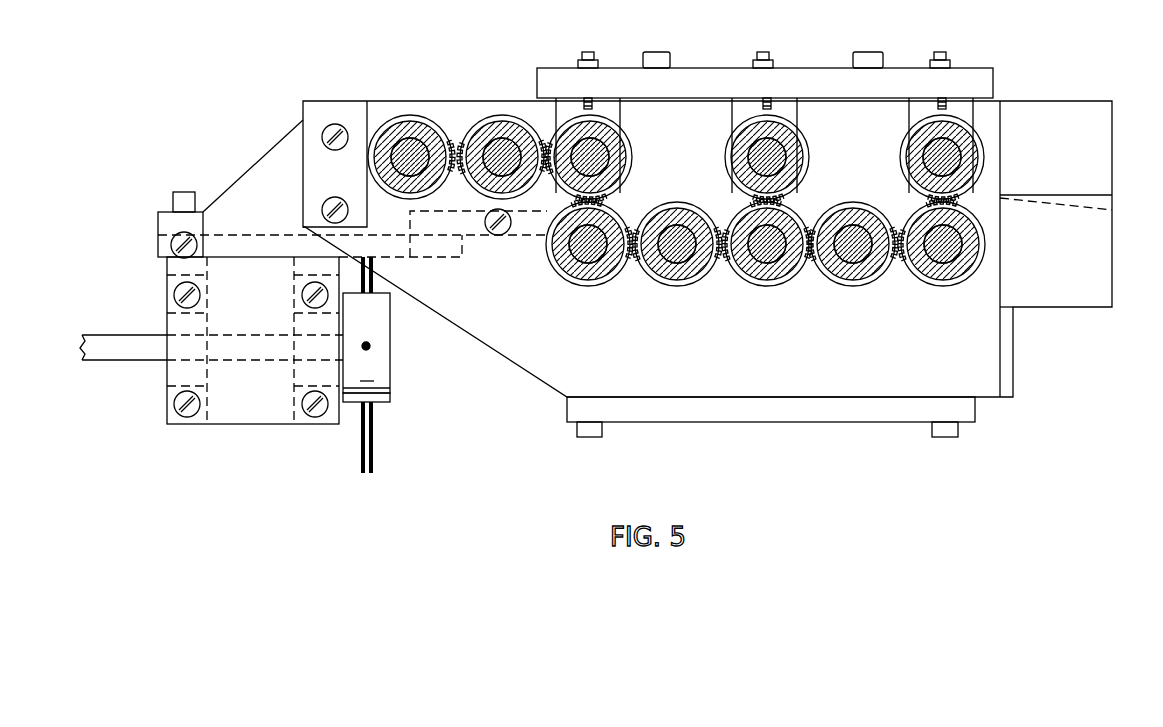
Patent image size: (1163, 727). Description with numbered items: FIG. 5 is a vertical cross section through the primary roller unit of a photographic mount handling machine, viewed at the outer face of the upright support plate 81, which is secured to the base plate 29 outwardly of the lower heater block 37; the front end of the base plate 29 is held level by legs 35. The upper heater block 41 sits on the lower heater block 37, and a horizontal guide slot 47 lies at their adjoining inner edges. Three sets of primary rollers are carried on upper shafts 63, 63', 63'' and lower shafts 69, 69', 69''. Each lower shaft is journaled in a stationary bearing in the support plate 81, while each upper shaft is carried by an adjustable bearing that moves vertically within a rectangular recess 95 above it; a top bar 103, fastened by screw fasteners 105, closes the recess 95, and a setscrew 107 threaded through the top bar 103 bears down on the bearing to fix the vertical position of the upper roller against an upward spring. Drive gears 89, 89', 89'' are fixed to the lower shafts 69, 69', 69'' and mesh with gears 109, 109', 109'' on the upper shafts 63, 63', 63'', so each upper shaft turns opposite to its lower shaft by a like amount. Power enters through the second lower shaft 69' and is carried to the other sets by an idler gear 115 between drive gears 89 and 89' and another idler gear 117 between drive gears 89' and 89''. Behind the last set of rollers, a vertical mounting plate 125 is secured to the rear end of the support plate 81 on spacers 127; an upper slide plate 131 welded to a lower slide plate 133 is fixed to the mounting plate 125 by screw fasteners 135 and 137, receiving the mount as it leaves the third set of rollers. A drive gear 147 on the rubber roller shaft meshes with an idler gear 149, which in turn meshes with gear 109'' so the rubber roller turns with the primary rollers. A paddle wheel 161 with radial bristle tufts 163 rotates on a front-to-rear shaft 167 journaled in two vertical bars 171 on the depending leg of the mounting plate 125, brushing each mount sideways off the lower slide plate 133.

The base plate 29 is at (717, 417).
The legs 35 is at (602, 430).
The lower heater block 37 is at (1105, 280).
The upper heater block 41 is at (1103, 177).
The slot 47 is at (1068, 204).
The upper shaft 63 is at (965, 150).
The upper shaft 63' is at (780, 150).
The upper shaft 63'' is at (603, 150).
The lower shaft 69 is at (941, 261).
The lower shaft 69' is at (767, 261).
The lower shaft 69'' is at (584, 261).
The support plate 81 is at (997, 368).
The drive gear 89 is at (943, 265).
The drive gear 89' is at (764, 265).
The drive gear 89'' is at (588, 265).
The recess 95 is at (740, 101).
The top bar 103 is at (972, 68).
The screw fasteners 105 is at (877, 52).
The setscrew 107 is at (590, 52).
The gear 109 is at (972, 157).
The gear 109' is at (793, 157).
The gear 109'' is at (617, 157).
The idler gear 115 is at (850, 282).
The idler gear 117 is at (684, 283).
The mounting plate 125 is at (229, 194).
The spacers 127 is at (338, 198).
The upper slide plate 131 is at (528, 231).
The lower slide plate 133 is at (243, 256).
The screw fastener 135 is at (500, 235).
The screw fastener 137 is at (172, 242).
The drive gear 147 is at (401, 187).
The idler gear 149 is at (470, 186).
The paddle wheel 161 is at (390, 382).
The tufts 163 is at (374, 442).
The shaft 167 is at (130, 361).
The bars 171 is at (208, 412).